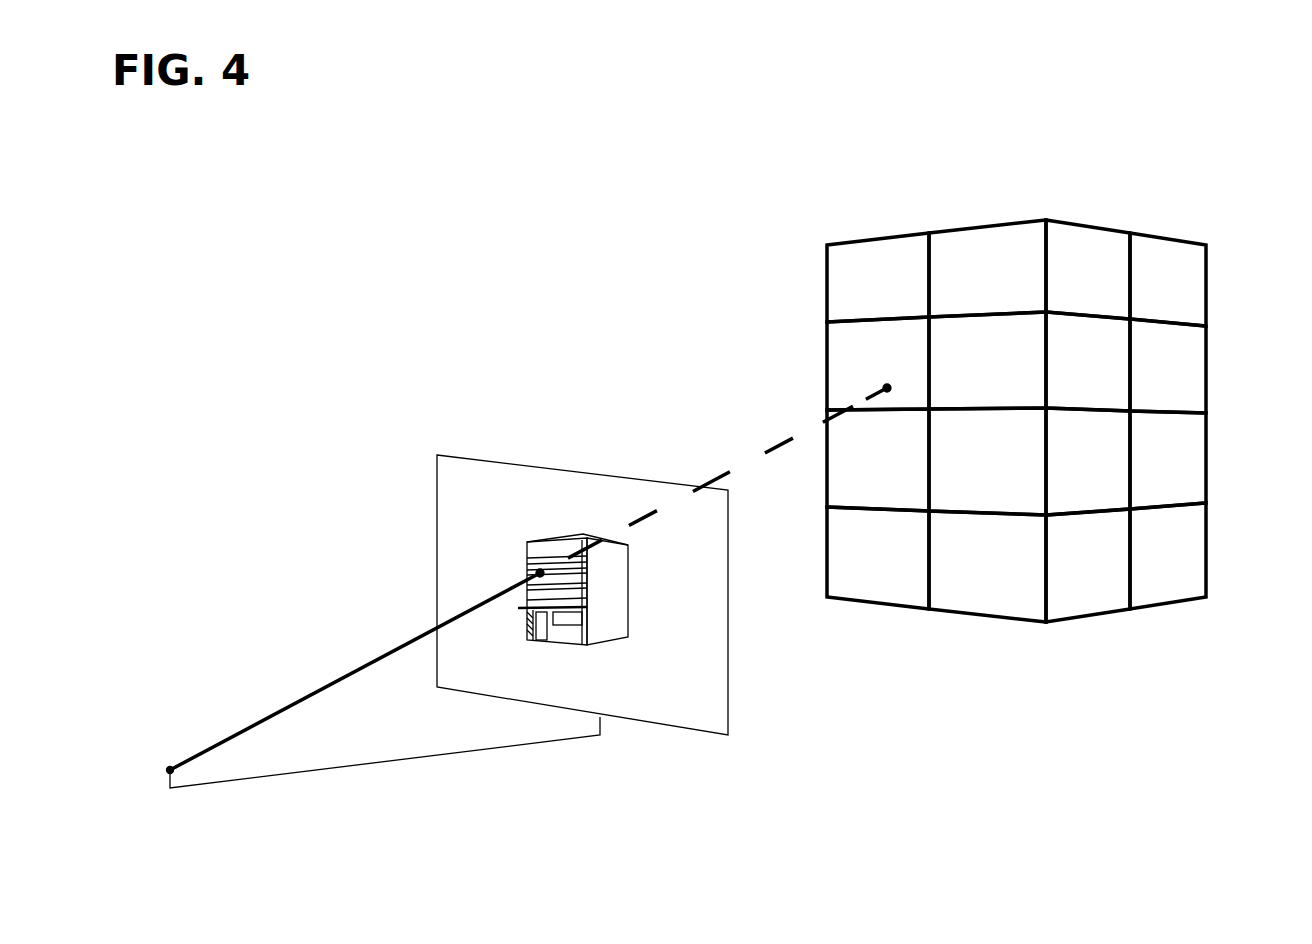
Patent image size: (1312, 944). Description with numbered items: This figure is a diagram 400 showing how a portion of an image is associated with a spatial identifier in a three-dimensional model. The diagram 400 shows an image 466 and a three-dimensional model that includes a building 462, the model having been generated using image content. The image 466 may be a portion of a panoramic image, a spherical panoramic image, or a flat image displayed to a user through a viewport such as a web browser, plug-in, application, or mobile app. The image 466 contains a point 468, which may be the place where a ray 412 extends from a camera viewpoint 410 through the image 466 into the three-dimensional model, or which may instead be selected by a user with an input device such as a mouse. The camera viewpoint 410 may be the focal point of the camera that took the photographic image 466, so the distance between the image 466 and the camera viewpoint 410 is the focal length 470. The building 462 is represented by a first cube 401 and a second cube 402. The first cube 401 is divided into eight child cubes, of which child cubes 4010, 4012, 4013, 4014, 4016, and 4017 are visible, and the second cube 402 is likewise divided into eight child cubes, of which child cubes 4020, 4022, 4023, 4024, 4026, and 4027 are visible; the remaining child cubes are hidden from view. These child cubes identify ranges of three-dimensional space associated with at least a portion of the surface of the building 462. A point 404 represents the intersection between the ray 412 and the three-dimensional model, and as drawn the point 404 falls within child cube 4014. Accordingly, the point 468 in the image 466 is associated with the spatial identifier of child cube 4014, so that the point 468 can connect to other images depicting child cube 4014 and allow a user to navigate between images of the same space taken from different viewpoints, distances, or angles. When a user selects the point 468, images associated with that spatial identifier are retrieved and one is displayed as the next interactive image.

The diagram 400 is at (440, 275).
The first cube 401 is at (1222, 248).
The second cube 402 is at (1222, 413).
The point 404 is at (884, 388).
The child cube 4010 is at (878, 277).
The child cube 4012 is at (987, 268).
The child cube 4013 is at (1168, 279).
The child cube 4014 is at (878, 363).
The child cube 4016 is at (987, 360).
The child cube 4017 is at (1168, 366).
The child cube 4020 is at (878, 460).
The child cube 4022 is at (987, 461).
The child cube 4023 is at (1168, 460).
The child cube 4024 is at (878, 558).
The child cube 4026 is at (987, 566).
The child cube 4027 is at (1168, 556).
The camera viewpoint 410 is at (168, 768).
The ray 412 is at (283, 707).
The building 462 is at (827, 310).
The image 466 is at (438, 485).
The point 468 is at (548, 574).
The focal length 470 is at (383, 762).